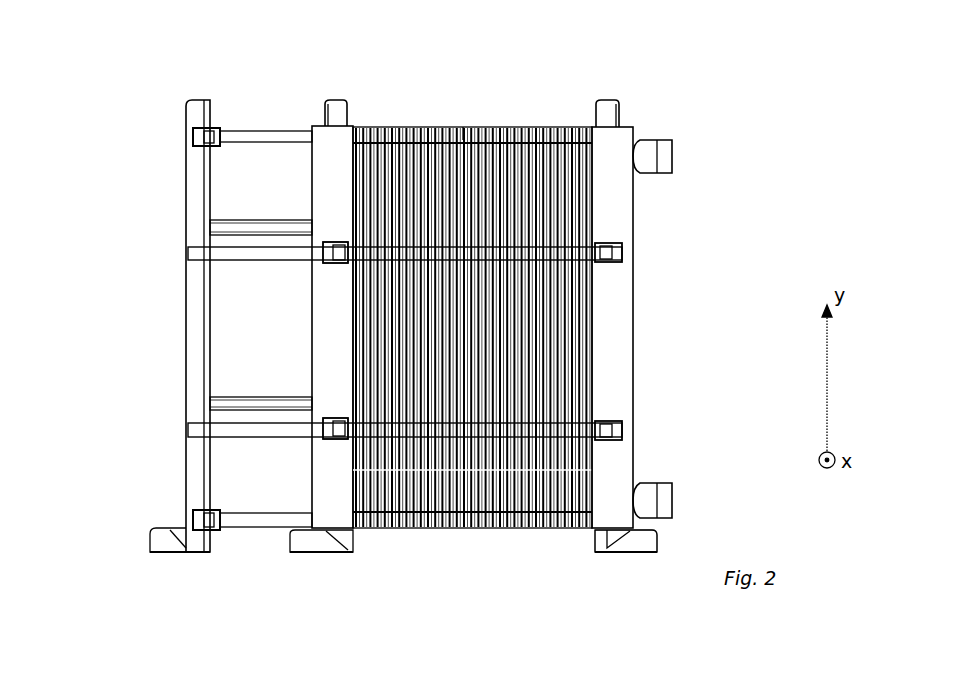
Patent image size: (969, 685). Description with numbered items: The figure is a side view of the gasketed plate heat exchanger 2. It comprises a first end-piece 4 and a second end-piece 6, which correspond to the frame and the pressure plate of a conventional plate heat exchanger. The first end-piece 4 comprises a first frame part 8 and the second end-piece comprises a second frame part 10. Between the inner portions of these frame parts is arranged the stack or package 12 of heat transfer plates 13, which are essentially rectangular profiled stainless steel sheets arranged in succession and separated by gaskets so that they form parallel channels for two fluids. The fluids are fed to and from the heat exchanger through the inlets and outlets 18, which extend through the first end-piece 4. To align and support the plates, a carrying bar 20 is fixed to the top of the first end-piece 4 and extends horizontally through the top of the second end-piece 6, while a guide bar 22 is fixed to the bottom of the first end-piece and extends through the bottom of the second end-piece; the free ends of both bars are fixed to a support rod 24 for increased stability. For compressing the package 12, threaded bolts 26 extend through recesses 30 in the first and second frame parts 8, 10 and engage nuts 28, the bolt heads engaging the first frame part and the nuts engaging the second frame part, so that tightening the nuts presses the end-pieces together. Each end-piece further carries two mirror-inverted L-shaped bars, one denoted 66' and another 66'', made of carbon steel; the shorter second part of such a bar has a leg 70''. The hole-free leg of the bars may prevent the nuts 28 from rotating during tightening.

The gasketed plate heat exchanger 2 is at (723, 108).
The first end-piece 4 is at (683, 282).
The second end-piece 6 is at (305, 108).
The first frame part 8 is at (612, 386).
The second frame part 10 is at (330, 300).
The package of heat transfer plates 12 is at (530, 127).
The heat transfer plates 13 is at (465, 127).
The inlets and outlets 18 is at (672, 501).
The carrying bar 20 is at (237, 135).
The guide bar 22 is at (262, 512).
The support rod 24 is at (193, 320).
The threaded bolts 26 is at (187, 248).
The nuts 28 is at (350, 242).
The recesses 30 is at (325, 447).
The bar 66' is at (618, 77).
The bar 66'' is at (358, 65).
The leg of second part 70'' is at (607, 564).